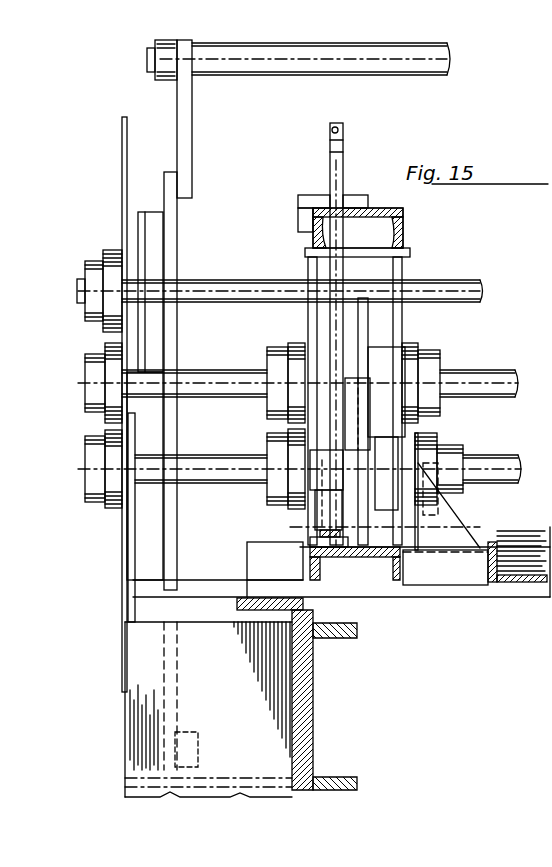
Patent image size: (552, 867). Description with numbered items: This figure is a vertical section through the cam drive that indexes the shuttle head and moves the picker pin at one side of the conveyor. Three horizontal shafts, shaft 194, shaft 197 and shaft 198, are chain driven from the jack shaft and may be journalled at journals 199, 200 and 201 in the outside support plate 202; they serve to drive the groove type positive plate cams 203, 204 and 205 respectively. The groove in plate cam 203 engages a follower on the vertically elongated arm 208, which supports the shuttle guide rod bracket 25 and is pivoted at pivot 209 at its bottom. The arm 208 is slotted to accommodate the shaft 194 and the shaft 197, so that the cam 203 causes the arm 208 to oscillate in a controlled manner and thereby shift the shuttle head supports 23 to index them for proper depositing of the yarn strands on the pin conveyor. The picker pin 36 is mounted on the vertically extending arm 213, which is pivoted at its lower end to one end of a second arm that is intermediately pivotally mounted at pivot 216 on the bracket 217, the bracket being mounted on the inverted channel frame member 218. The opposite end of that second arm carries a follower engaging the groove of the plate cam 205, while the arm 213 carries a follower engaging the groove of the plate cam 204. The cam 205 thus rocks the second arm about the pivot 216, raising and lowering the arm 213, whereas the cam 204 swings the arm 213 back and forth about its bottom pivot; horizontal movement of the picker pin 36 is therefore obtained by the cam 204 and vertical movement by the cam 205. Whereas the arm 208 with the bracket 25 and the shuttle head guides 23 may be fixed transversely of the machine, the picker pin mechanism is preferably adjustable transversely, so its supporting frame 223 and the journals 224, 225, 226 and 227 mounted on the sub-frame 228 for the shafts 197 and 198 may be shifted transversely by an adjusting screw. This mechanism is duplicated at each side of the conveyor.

The shuttle head support 23 is at (217, 43).
The shuttle guide rod bracket 25 is at (190, 147).
The picker pin 36 is at (338, 128).
The shaft 194 is at (457, 280).
The shaft 197 is at (500, 370).
The shaft 198 is at (507, 458).
The journal 199 is at (103, 262).
The journal 200 is at (98, 372).
The journal 201 is at (96, 448).
The outside support plate 202 is at (124, 570).
The plate cam 203 is at (153, 246).
The plate cam 204 is at (350, 327).
The plate cam 205 is at (341, 572).
The vertically elongated arm 208 is at (174, 326).
The pivot 209 is at (200, 748).
The vertically extending arm 213 is at (343, 181).
The intermediate pivot 216 is at (300, 518).
The bracket 217 is at (312, 530).
The inverted channel frame member 218 is at (320, 578).
The supporting frame 223 is at (403, 233).
The journal 224 is at (276, 348).
The journal 225 is at (435, 352).
The journal 226 is at (270, 448).
The journal 227 is at (448, 440).
The sub-frame 228 is at (490, 588).